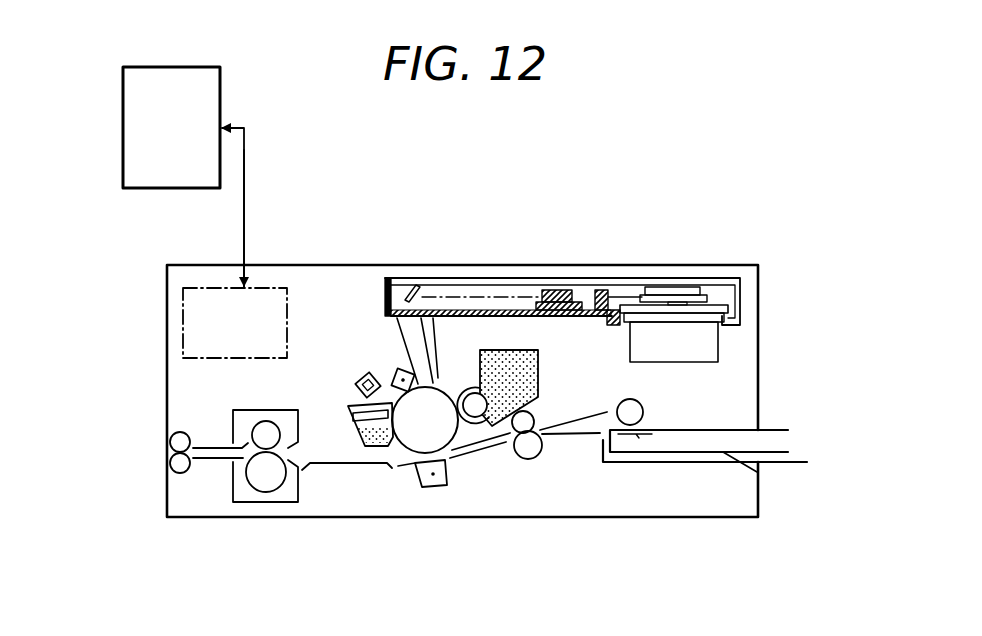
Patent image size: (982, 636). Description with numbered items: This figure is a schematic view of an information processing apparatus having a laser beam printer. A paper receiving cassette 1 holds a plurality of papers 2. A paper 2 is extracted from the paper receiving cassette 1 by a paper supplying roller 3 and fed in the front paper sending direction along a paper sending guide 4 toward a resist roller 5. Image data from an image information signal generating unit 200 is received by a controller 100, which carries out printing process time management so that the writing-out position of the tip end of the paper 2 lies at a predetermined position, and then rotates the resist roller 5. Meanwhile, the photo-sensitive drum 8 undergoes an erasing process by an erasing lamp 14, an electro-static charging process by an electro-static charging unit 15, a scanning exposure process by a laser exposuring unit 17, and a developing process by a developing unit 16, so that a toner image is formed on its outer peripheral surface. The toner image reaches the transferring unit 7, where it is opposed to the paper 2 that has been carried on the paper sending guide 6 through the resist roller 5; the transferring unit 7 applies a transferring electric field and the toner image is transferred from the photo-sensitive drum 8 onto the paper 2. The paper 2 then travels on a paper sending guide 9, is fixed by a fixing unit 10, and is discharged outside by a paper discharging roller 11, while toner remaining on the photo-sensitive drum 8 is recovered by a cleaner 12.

The paper receiving cassette 1 is at (807, 462).
The paper 2 is at (757, 482).
The paper supplying roller 3 is at (645, 412).
The paper sending guide 4 is at (575, 438).
The resist roller 5 is at (530, 460).
The paper sending guide 6 is at (490, 452).
The transferring unit 7 is at (447, 485).
The photo-sensitive drum 8 is at (397, 446).
The paper sending guide 9 is at (337, 466).
The fixing unit 10 is at (258, 497).
The paper discharging roller 11 is at (170, 452).
The cleaner 12 is at (350, 414).
The erasing lamp 14 is at (368, 375).
The electro-static charging unit 15 is at (400, 369).
The developing unit 16 is at (490, 351).
The laser exposuring unit 17 is at (517, 278).
The controller 100 is at (183, 334).
The image information signal generating unit 200 is at (123, 104).